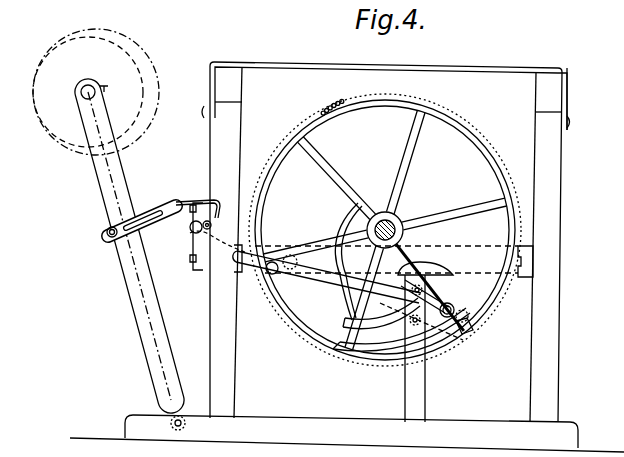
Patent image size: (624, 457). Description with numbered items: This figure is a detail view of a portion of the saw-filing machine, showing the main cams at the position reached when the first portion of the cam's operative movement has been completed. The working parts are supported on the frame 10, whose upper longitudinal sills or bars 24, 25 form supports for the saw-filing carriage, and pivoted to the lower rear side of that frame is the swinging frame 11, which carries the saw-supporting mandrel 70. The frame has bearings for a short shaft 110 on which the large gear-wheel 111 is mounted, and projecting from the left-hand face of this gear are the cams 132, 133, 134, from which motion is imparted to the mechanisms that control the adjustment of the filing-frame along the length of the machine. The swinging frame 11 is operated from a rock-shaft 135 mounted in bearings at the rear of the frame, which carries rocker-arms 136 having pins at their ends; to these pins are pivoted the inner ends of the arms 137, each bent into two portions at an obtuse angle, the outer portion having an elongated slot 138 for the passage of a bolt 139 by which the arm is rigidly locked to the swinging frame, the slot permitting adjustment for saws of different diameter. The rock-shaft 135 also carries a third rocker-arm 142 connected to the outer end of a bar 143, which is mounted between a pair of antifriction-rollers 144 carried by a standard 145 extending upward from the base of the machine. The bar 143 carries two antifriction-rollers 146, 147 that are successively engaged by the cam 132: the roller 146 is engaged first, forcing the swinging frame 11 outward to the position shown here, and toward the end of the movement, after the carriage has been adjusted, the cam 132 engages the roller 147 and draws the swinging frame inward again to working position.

The frame 10 is at (541, 356).
The swinging frame 11 is at (137, 287).
The longitudinal sill or bar 24 is at (230, 83).
The longitudinal sill or bar 25 is at (552, 93).
The saw-supporting mandrel 70 is at (86, 96).
The short shaft 110 is at (431, 208).
The gear-wheel 111 is at (515, 141).
The cam 132 is at (441, 337).
The cam 133 is at (350, 322).
The cam 134 is at (352, 220).
The rock-shaft 135 is at (196, 245).
The rocker-arm 136 is at (217, 220).
The arm 137 is at (172, 200).
The elongated slot 138 is at (157, 194).
The bolt 139 is at (108, 230).
The third rocker-arm 142 is at (189, 231).
The bar 143 is at (300, 287).
The antifriction-rollers 144 is at (412, 292).
The standard 145 is at (462, 412).
The antifriction-roller 146 is at (483, 290).
The antifriction-roller 147 is at (268, 276).